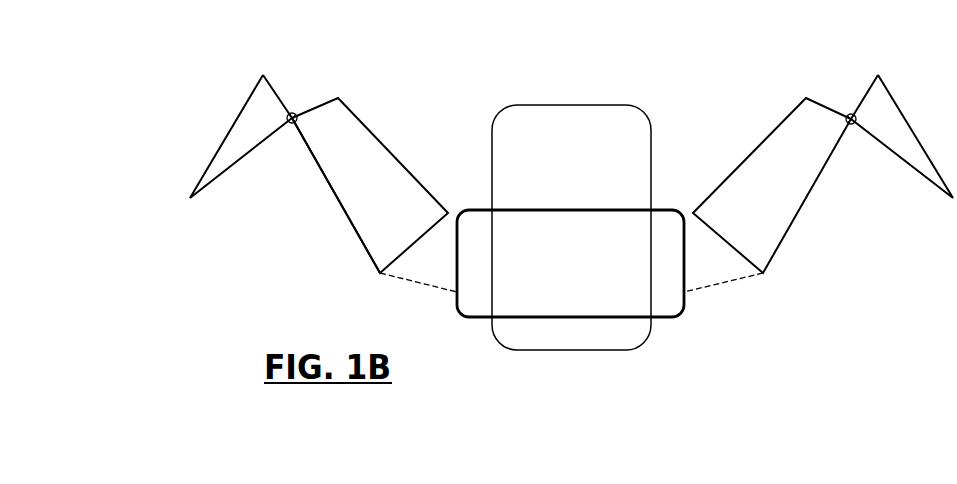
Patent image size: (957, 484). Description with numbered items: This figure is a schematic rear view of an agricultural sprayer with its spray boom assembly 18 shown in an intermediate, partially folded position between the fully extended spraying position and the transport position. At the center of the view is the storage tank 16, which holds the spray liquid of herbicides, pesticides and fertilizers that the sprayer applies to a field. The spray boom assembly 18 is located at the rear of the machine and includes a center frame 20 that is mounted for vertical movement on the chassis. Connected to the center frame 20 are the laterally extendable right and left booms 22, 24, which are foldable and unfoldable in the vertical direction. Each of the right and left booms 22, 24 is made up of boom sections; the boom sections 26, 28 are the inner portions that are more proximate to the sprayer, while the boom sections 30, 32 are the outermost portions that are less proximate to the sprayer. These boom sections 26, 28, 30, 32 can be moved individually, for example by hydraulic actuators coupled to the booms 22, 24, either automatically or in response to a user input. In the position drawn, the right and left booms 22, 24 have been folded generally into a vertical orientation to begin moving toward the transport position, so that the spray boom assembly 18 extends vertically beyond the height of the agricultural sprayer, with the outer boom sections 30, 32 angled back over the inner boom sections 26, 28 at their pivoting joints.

The storage tank 16 is at (651, 132).
The spray boom assembly 18 is at (443, 187).
The center frame 20 is at (562, 317).
The right boom 22 is at (848, 95).
The left boom 24 is at (340, 92).
The boom section 26 is at (793, 218).
The boom section 28 is at (338, 200).
The boom section 30 is at (907, 163).
The boom section 32 is at (235, 163).